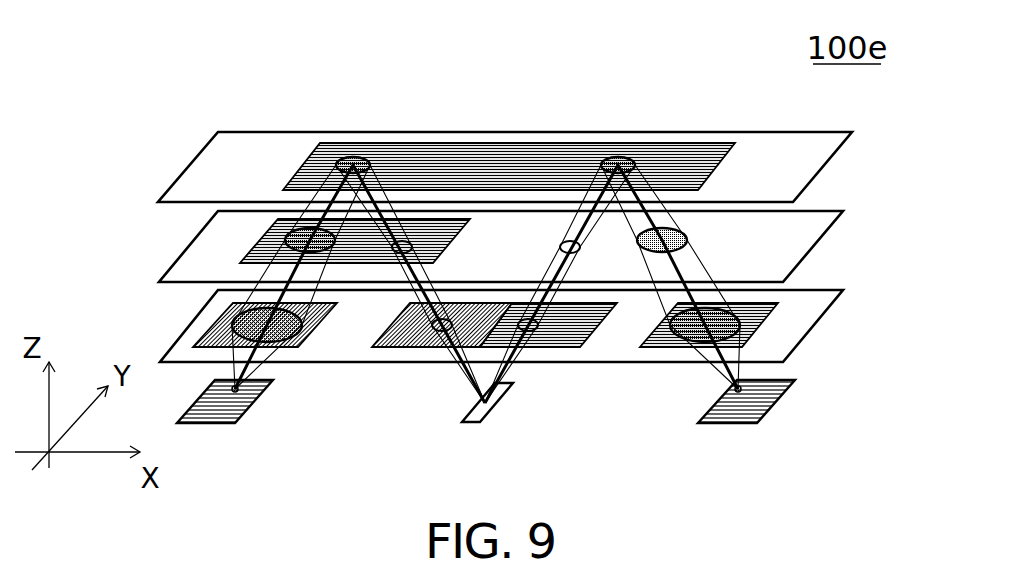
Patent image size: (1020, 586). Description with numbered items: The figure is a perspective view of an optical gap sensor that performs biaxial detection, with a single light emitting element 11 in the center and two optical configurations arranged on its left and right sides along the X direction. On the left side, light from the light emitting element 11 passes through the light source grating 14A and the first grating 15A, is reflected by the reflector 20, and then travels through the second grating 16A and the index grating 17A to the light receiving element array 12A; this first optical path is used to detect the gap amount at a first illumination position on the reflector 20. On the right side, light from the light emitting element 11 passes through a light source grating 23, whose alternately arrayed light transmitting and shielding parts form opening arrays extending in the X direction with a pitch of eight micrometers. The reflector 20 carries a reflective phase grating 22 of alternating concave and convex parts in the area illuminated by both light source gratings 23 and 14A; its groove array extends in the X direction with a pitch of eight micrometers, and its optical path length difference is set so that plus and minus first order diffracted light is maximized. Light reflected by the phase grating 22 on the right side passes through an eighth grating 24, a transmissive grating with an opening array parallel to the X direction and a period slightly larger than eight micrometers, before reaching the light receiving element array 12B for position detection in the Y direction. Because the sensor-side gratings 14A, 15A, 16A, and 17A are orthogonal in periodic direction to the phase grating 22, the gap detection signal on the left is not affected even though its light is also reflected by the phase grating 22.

The light emitting element 11 is at (483, 418).
The light receiving element array 12A is at (213, 425).
The light receiving element array 12B is at (768, 411).
The light source grating 14A is at (395, 350).
The first grating 15A is at (423, 218).
The second grating 16A is at (250, 253).
The index grating 17A is at (212, 327).
The reflector 20 is at (187, 168).
The phase grating 22 is at (660, 143).
The light source grating 23 is at (587, 349).
The eighth grating 24 is at (770, 323).